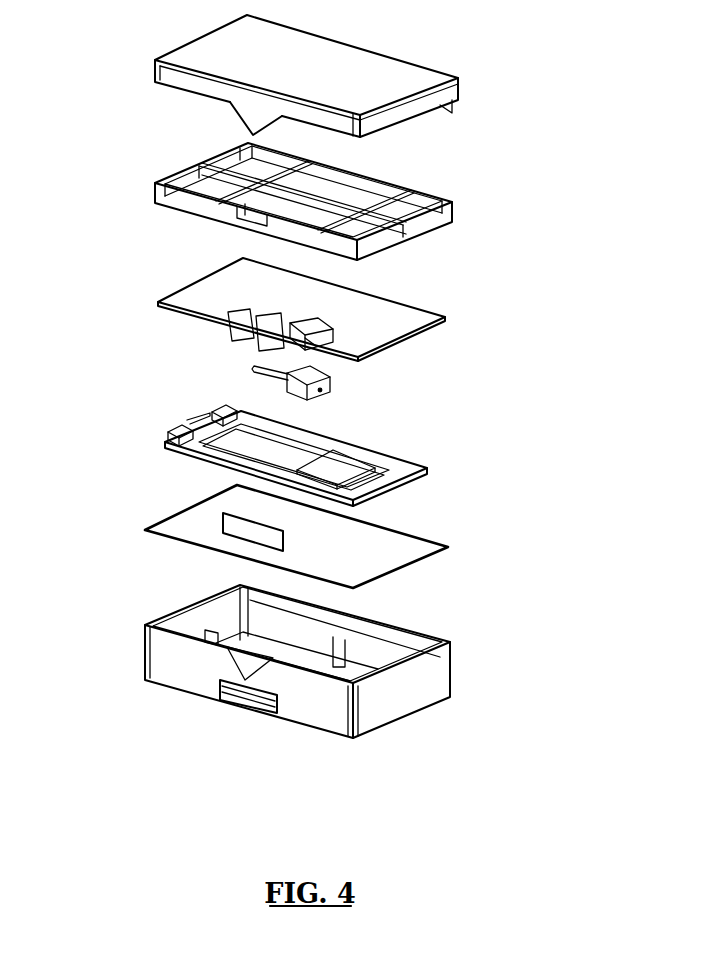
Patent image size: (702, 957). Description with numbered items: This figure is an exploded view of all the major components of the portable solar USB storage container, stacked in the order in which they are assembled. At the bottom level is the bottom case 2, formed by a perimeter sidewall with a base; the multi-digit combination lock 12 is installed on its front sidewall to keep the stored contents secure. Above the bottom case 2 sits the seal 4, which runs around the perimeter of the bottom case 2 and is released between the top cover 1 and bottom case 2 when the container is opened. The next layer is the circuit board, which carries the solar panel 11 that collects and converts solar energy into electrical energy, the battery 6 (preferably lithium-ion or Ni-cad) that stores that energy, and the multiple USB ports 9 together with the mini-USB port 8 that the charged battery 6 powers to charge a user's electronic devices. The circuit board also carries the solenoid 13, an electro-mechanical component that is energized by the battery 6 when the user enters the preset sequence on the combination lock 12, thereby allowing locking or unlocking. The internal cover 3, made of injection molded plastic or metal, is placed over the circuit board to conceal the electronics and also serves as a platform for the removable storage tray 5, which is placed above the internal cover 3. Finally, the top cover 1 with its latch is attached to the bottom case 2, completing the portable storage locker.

The top cover 1 is at (145, 56).
The bottom case 2 is at (130, 682).
The internal cover 3 is at (472, 312).
The seal 4 is at (304, 572).
The removable storage tray 5 is at (472, 201).
The battery 6 is at (313, 391).
The mini-USB port 8 is at (178, 415).
The USB ports 9 is at (201, 399).
The solar panel 11 is at (395, 504).
The combination lock 12 is at (203, 528).
The solenoid 13 is at (345, 386).